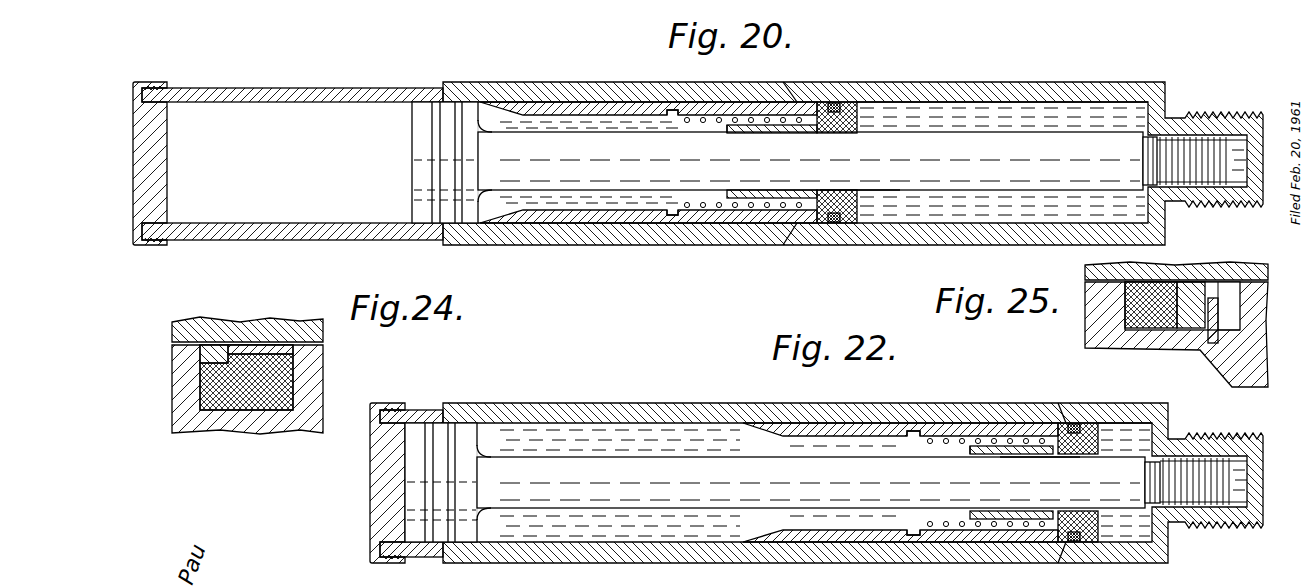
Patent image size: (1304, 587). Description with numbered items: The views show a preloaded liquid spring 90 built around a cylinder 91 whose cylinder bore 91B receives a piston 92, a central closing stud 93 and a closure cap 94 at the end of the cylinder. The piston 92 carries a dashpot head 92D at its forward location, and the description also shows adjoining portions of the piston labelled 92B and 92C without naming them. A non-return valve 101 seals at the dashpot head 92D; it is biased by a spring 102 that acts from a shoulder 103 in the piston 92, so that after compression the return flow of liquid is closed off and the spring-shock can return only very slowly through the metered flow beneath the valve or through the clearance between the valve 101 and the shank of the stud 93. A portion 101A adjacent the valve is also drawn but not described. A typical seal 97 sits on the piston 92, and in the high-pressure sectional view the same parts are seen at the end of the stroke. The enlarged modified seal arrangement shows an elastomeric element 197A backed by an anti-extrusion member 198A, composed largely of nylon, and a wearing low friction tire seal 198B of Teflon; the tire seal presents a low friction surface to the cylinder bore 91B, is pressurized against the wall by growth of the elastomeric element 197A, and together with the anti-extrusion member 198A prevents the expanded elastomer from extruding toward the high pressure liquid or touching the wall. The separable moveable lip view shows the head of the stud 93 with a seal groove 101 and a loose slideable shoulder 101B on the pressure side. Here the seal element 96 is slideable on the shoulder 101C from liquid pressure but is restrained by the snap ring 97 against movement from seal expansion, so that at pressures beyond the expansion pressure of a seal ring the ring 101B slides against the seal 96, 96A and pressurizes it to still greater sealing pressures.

In FIG. 20, the liquid spring 90 is at (991, 70).
In FIG. 22, the liquid spring 90 is at (681, 391).
In FIG. 20, the cylinder 91 is at (1092, 82).
In FIG. 22, the cylinder 91 is at (1129, 403).
In FIG. 24, the cylinder 91 is at (312, 318).
In FIG. 20, the cylinder bore 91B is at (1043, 102).
In FIG. 22, the cylinder bore 91B is at (1108, 423).
In FIG. 20, the piston 92 is at (275, 238).
In FIG. 22, the piston 92 is at (602, 557).
In FIG. 20, the inner sleeve body 92B is at (735, 101).
In FIG. 22, the inner sleeve body 92B is at (1003, 423).
In FIG. 20, the rod guide bore 92C is at (843, 190).
In FIG. 22, the rod guide bore 92C is at (1055, 455).
In FIG. 20, the dashpot head 92D is at (884, 102).
In FIG. 22, the dashpot head 92D is at (1120, 563).
In FIG. 24, the dashpot head 92D is at (265, 376).
In FIG. 20, the central closing stud 93 is at (428, 102).
In FIG. 22, the central closing stud 93 is at (431, 423).
In FIG. 20, the closure cap 94 is at (165, 145).
In FIG. 22, the closure cap 94 is at (378, 493).
In FIG. 25, the seal 96 is at (1151, 313).
In FIG. 25, the seal 96A is at (1172, 280).
In FIG. 20, the seal 97 is at (833, 223).
In FIG. 22, the seal 97 is at (1071, 425).
In FIG. 25, the seal 97 is at (1220, 306).
In FIG. 20, the non-return valve 101 is at (790, 134).
In FIG. 22, the non-return valve 101 is at (1022, 511).
In FIG. 25, the non-return valve 101 is at (1125, 305).
In FIG. 20, the bearing sleeve end 101A is at (731, 134).
In FIG. 22, the bearing sleeve end 101A is at (975, 455).
In FIG. 25, the loose slideable shoulder 101B is at (1185, 282).
In FIG. 25, the shoulder 101C is at (1218, 312).
In FIG. 20, the spring 102 is at (705, 209).
In FIG. 22, the spring 102 is at (964, 440).
In FIG. 20, the shoulder 103 is at (669, 108).
In FIG. 22, the shoulder 103 is at (908, 434).
In FIG. 24, the elastomeric element 197A is at (248, 434).
In FIG. 24, the anti-extrusion member 198A is at (208, 318).
In FIG. 24, the tire seal 198B is at (266, 318).